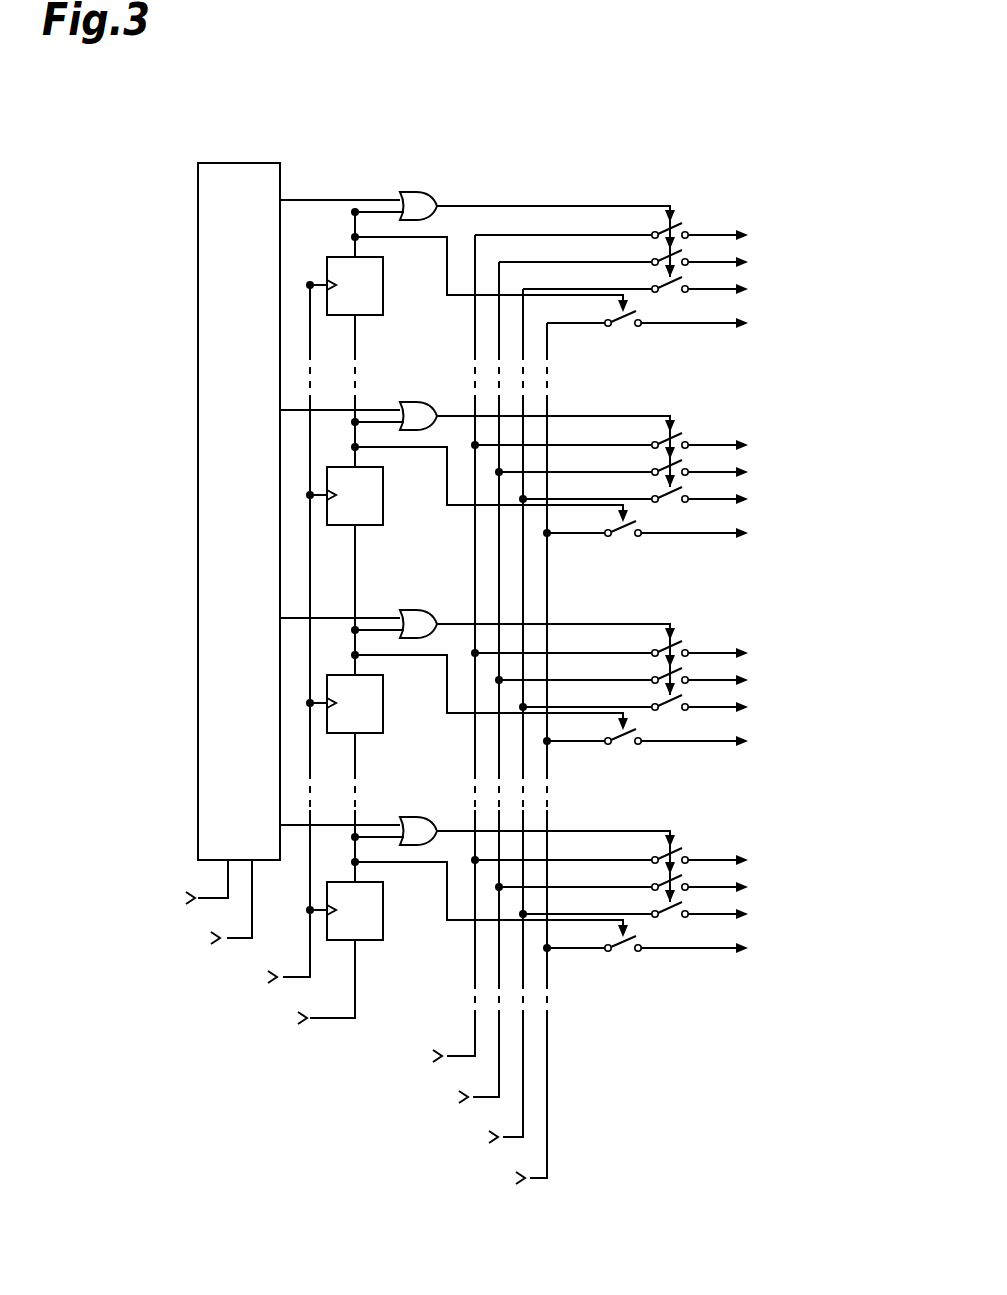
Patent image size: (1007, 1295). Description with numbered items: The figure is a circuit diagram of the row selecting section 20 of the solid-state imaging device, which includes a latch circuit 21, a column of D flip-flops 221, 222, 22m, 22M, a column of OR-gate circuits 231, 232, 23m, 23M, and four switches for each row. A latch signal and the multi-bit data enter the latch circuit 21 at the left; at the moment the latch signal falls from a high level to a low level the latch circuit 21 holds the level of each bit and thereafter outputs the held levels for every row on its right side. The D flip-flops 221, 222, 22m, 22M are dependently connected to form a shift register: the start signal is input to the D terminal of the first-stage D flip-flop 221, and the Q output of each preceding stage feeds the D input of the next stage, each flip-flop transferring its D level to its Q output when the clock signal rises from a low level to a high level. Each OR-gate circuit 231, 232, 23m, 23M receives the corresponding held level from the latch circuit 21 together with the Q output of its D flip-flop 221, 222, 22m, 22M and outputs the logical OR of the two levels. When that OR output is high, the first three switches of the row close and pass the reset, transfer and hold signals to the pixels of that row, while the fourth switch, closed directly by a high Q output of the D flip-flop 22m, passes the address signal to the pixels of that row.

The row selecting section 20 is at (586, 134).
The latch circuit 21 is at (235, 163).
The D flip-flop 22M is at (383, 285).
The D flip-flop 22m is at (383, 495).
The D flip-flop 222 is at (383, 703).
The D flip-flop 221 is at (383, 910).
The OR-gate circuit 23M is at (407, 192).
The OR-gate circuit 23m is at (407, 402).
The OR-gate circuit 232 is at (407, 610).
The OR-gate circuit 231 is at (407, 817).